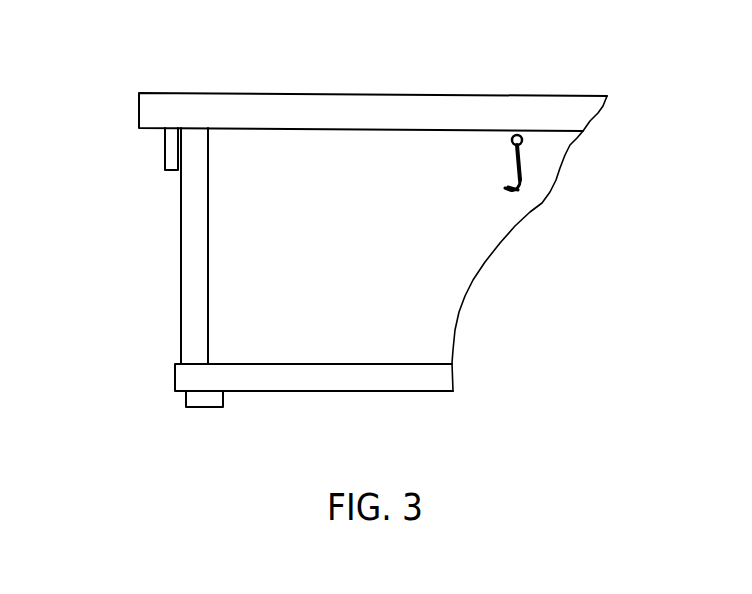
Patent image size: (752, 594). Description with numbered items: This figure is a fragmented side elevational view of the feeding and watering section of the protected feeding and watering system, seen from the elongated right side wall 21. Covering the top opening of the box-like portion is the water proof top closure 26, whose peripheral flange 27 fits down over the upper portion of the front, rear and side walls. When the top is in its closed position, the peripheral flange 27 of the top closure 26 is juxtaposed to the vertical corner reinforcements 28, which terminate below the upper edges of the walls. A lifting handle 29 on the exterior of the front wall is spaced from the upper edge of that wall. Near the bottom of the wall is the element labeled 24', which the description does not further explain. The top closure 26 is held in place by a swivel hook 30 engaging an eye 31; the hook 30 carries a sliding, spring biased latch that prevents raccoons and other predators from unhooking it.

The elongated right side wall 21 is at (340, 322).
The foot pad 24' is at (161, 436).
The top closure 26 is at (433, 95).
The peripheral flange 27 is at (257, 128).
The corner reinforcements 28 is at (180, 308).
The lifting handles 29 is at (165, 146).
The swivel hook 30 is at (525, 180).
The eye 31 is at (522, 192).